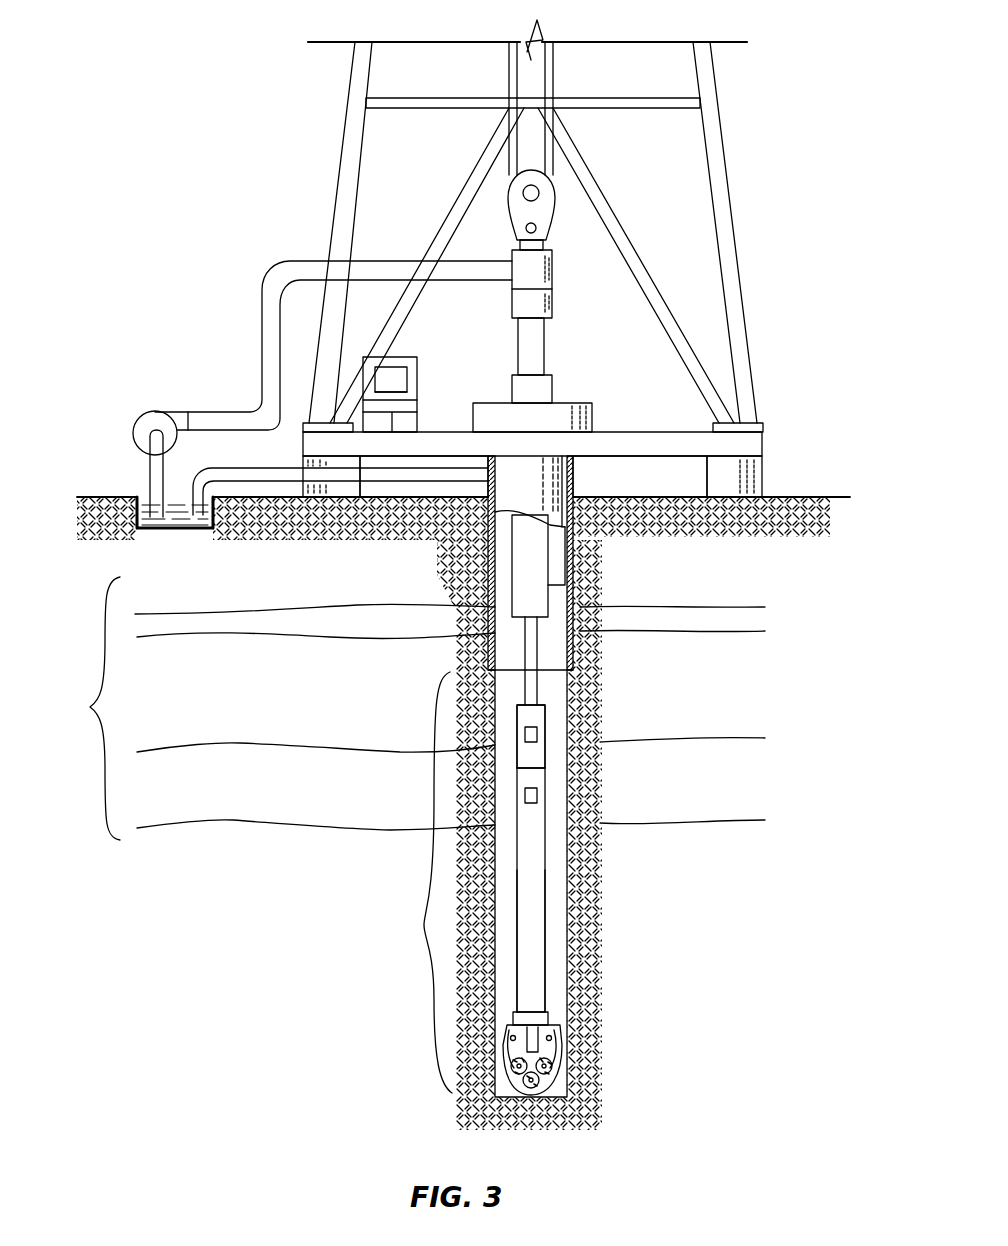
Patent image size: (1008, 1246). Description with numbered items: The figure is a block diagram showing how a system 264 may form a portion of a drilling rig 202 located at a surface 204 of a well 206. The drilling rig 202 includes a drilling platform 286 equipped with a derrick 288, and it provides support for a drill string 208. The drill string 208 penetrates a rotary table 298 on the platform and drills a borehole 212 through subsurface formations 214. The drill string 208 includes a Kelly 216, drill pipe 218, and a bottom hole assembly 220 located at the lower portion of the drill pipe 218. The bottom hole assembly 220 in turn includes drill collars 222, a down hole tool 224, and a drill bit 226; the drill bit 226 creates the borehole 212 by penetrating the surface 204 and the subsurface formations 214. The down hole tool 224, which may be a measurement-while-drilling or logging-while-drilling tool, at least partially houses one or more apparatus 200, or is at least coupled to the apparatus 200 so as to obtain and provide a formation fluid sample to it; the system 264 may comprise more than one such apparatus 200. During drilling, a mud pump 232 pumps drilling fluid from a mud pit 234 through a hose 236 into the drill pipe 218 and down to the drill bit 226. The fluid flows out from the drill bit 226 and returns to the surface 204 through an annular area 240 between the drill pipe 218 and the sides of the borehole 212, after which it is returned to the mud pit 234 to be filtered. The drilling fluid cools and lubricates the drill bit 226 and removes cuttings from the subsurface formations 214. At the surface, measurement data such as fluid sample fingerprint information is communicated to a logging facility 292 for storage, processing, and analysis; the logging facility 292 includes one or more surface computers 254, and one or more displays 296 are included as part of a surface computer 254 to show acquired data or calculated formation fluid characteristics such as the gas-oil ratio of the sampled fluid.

The system 264 is at (194, 156).
The derrick 288 is at (723, 130).
The drilling rig 202 is at (735, 189).
The hose 236 is at (262, 327).
The mud pump 232 is at (163, 413).
The mud pit 234 is at (139, 497).
The logging facility 292 is at (405, 346).
The surface computer 254 is at (418, 366).
The display 296 is at (409, 388).
The Kelly 216 is at (547, 341).
The rotary table 298 is at (553, 388).
The drilling platform 286 is at (768, 444).
The well 206 is at (582, 490).
The surface 204 is at (787, 497).
The drill collars 222 is at (567, 586).
The drill pipe 218 is at (560, 676).
The annular area 240 is at (555, 702).
The apparatus 200 is at (538, 733).
The down hole tool 224 is at (532, 782).
The drill string 208 is at (553, 875).
The borehole 212 is at (565, 978).
The drill bit 226 is at (553, 1052).
The bottom hole assembly 220 is at (471, 883).
The subsurface formations 214 is at (405, 708).